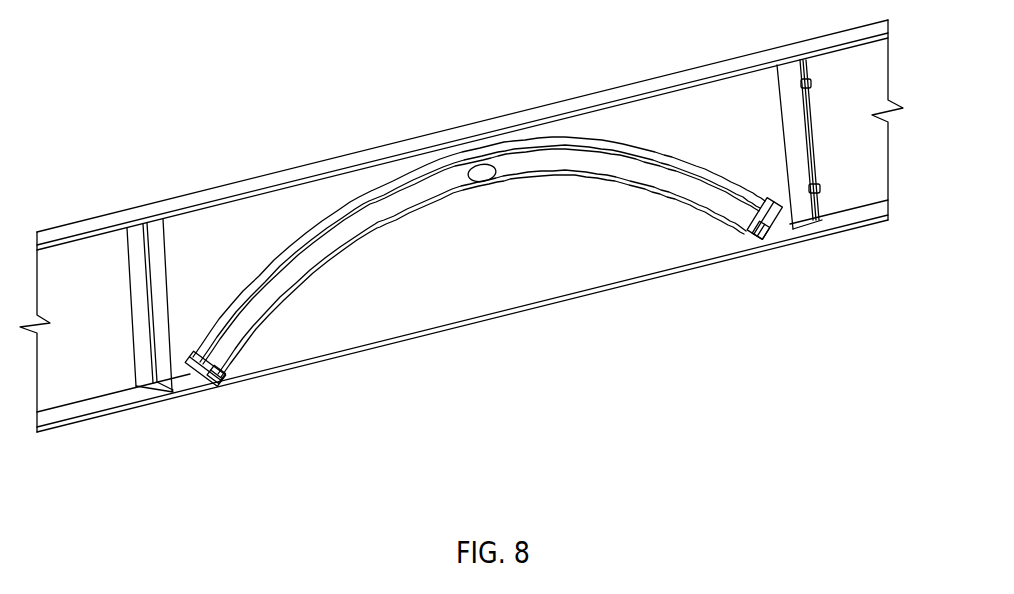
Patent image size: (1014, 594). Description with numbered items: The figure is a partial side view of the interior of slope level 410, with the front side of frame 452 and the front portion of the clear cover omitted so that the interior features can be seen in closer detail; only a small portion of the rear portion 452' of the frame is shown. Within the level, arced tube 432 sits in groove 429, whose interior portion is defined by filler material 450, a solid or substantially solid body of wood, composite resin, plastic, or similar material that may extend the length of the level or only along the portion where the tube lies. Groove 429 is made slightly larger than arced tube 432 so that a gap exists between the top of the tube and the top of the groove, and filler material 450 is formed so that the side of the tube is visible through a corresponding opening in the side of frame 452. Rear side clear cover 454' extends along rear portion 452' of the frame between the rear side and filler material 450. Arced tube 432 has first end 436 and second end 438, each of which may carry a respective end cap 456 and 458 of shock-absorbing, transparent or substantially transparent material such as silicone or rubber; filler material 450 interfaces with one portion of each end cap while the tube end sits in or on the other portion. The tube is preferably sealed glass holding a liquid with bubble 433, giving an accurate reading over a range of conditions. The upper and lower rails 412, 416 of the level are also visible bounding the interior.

The slope level 410 is at (507, 400).
The top rail 412 is at (610, 88).
The bottom rail 416 is at (598, 297).
The groove 429 is at (392, 182).
The arced tube 432 is at (442, 188).
The bubble 433 is at (483, 168).
The first end 436 is at (196, 353).
The second end 438 is at (800, 58).
The filler material 450 is at (198, 378).
The frame 452 is at (131, 283).
The rear portion of the frame 452' is at (137, 433).
The rear side clear cover 454' is at (493, 221).
The end cap 456 is at (240, 370).
The end cap 458 is at (740, 248).